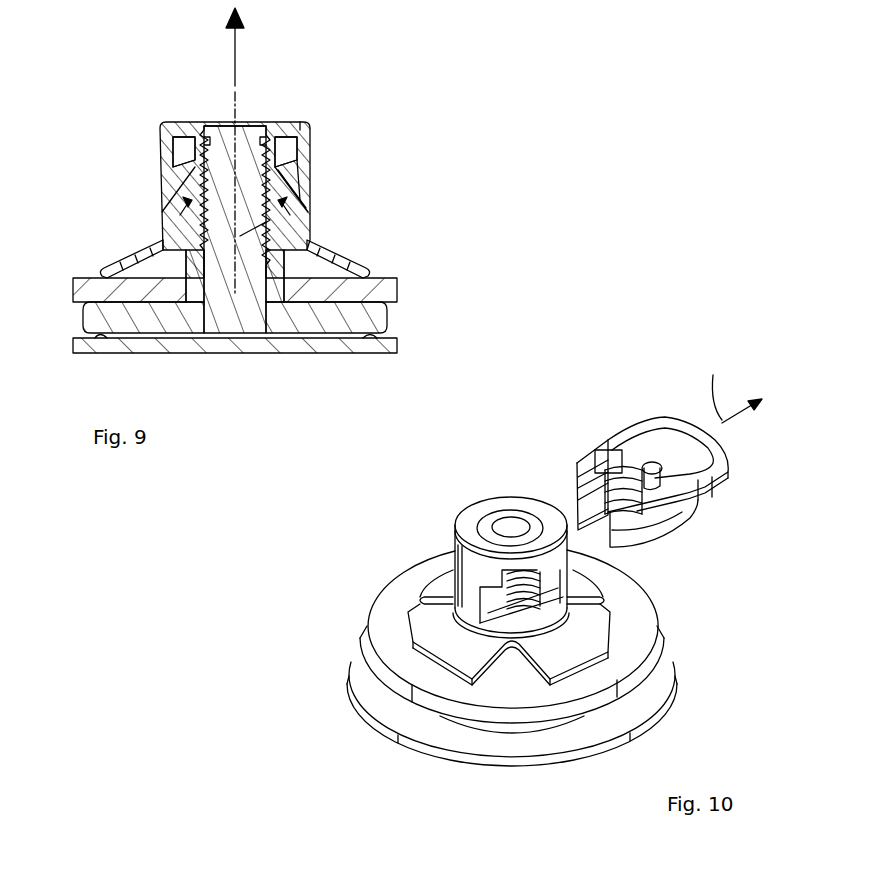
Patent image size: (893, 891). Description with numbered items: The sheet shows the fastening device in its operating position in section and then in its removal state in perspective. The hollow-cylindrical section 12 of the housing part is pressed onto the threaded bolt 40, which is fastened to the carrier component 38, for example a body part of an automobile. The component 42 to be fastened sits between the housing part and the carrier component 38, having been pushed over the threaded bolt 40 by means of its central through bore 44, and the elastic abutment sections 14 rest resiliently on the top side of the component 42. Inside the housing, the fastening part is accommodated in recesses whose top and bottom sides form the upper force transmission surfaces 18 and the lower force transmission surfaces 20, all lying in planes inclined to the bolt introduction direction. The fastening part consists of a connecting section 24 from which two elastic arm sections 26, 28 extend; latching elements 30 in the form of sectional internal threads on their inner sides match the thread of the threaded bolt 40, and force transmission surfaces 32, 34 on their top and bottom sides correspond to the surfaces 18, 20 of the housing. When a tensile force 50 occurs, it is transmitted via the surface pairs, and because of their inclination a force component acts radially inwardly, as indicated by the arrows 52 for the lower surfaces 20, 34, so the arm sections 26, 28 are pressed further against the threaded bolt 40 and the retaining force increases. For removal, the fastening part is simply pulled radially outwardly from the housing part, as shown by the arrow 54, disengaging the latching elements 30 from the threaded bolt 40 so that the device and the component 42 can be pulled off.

In FIG. 9, the hollow-cylindrical section 12 is at (288, 122).
In FIG. 10, the hollow-cylindrical section 12 is at (473, 515).
In FIG. 9, the elastic abutment sections 14 is at (125, 257).
In FIG. 10, the elastic abutment sections 14 is at (437, 640).
In FIG. 9, the upper force transmission surfaces 18 is at (302, 131).
In FIG. 9, the lower force transmission surfaces 20 is at (233, 108).
In FIG. 10, the connecting section 24 is at (685, 425).
In FIG. 9, the elastic arm section 26 is at (300, 187).
In FIG. 10, the elastic arm section 26 is at (665, 523).
In FIG. 9, the elastic arm section 28 is at (170, 185).
In FIG. 10, the elastic arm section 28 is at (590, 458).
In FIG. 10, the latching elements 30 is at (626, 463).
In FIG. 9, the force transmission surfaces 32 is at (295, 175).
In FIG. 9, the force transmission surfaces 34 is at (302, 199).
In FIG. 9, the carrier component 38 is at (392, 346).
In FIG. 10, the carrier component 38 is at (375, 697).
In FIG. 9, the threaded bolt 40 is at (232, 240).
In FIG. 10, the threaded bolt 40 is at (510, 527).
In FIG. 9, the component 42 is at (78, 284).
In FIG. 10, the component 42 is at (645, 633).
In FIG. 9, the central through bore 44 is at (290, 222).
In FIG. 9, the tensile force 50 is at (240, 40).
In FIG. 9, the arrows 52 is at (208, 134).
In FIG. 10, the arrow 54 is at (729, 383).